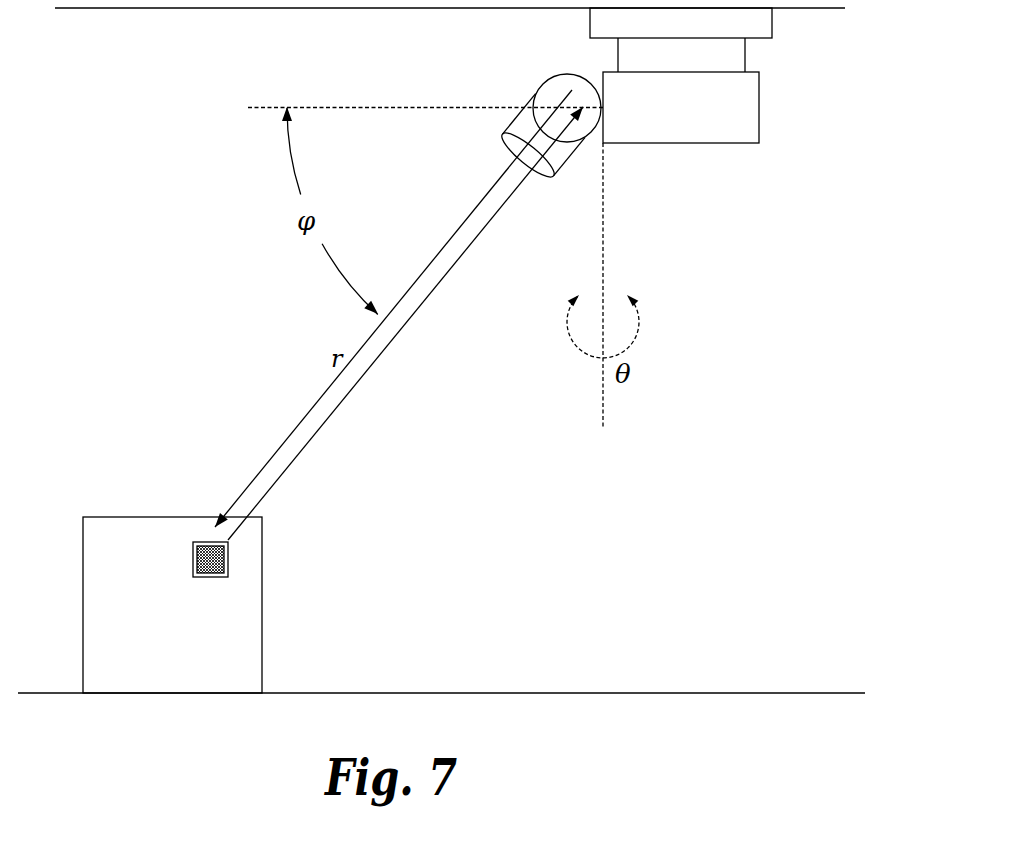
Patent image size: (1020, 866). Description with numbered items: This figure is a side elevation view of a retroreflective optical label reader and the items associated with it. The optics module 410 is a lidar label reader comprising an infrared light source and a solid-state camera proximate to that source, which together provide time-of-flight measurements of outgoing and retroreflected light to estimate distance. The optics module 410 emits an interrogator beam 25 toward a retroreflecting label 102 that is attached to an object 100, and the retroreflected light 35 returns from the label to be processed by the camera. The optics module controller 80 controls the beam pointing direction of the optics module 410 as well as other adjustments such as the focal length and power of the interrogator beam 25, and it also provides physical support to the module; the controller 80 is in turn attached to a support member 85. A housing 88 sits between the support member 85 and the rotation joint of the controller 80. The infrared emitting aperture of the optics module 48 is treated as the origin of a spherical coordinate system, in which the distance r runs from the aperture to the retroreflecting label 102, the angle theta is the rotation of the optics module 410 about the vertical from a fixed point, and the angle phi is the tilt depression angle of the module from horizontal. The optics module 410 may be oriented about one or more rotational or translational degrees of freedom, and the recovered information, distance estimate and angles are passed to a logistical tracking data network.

The optics module 410 is at (137, 182).
The support member 85 is at (590, 22).
The drive housing 88 is at (759, 108).
The optics module controller 80 is at (692, 152).
The optics module 48 is at (572, 152).
The interrogator beam 25 is at (268, 458).
The retroreflected light 35 is at (310, 440).
The object 100 is at (262, 641).
The retroreflecting label 102 is at (228, 560).